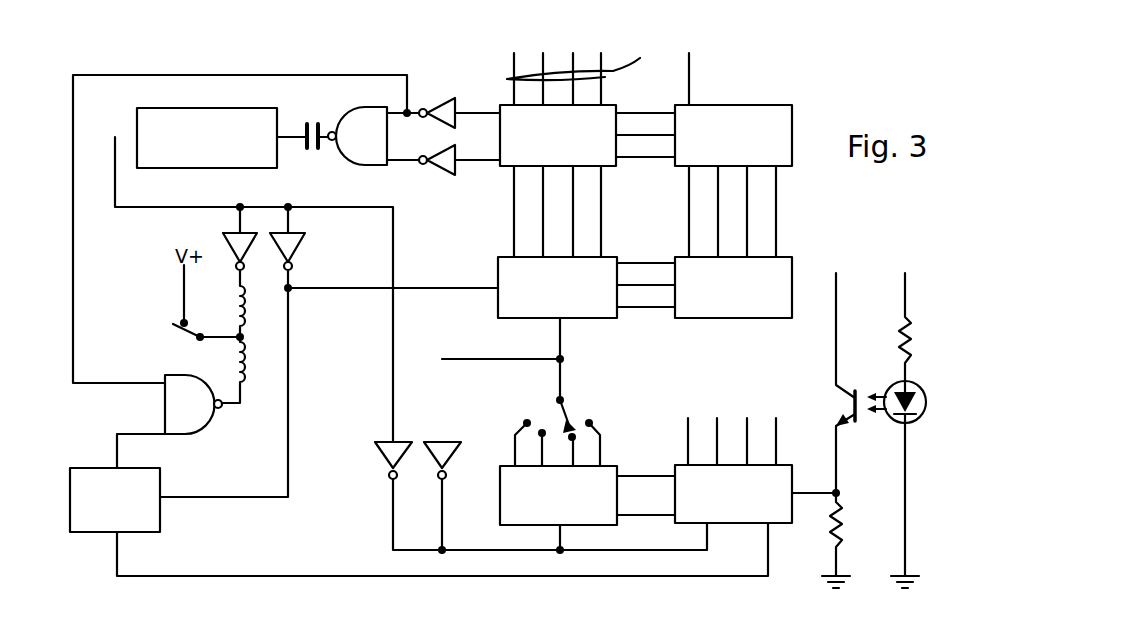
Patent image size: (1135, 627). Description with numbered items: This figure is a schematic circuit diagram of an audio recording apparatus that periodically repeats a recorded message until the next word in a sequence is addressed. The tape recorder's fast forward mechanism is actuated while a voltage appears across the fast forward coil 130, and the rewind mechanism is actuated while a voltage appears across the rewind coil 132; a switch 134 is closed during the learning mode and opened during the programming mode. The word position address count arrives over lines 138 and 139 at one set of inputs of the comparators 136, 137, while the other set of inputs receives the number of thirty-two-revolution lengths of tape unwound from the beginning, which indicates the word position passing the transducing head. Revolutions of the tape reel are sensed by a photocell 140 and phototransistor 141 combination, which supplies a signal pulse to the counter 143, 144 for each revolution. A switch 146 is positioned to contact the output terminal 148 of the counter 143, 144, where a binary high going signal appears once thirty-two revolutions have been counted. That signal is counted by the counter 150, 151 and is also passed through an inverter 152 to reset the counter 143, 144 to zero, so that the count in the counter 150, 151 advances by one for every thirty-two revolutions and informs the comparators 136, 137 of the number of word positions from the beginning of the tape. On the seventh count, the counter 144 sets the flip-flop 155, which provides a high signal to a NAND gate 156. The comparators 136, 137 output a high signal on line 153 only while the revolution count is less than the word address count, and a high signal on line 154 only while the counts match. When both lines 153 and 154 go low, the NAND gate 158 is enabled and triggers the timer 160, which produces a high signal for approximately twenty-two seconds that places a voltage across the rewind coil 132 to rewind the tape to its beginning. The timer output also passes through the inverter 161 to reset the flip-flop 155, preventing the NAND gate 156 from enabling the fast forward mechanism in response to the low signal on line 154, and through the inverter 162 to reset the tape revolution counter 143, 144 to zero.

The fast forward coil 130 is at (245, 378).
The rewind coil 132 is at (245, 305).
The switch 134 is at (183, 330).
The comparator 136 is at (605, 105).
The comparator 137 is at (770, 105).
The line 138 is at (584, 61).
The line 139 is at (690, 72).
The photocell 140 is at (918, 393).
The phototransistor 141 is at (852, 395).
The counter 143 is at (612, 464).
The counter 144 is at (782, 465).
The switch 146 is at (563, 407).
The output terminal 148 is at (574, 450).
The counter 150 is at (498, 262).
The counter 151 is at (790, 258).
The inverter 152 is at (443, 442).
The line 153 is at (483, 162).
The line 154 is at (481, 111).
The flip-flop 155 is at (160, 524).
The NAND gate 156 is at (205, 425).
The NAND gate 158 is at (350, 113).
The timer 160 is at (163, 108).
The inverter 161 is at (305, 252).
The inverter 162 is at (383, 442).